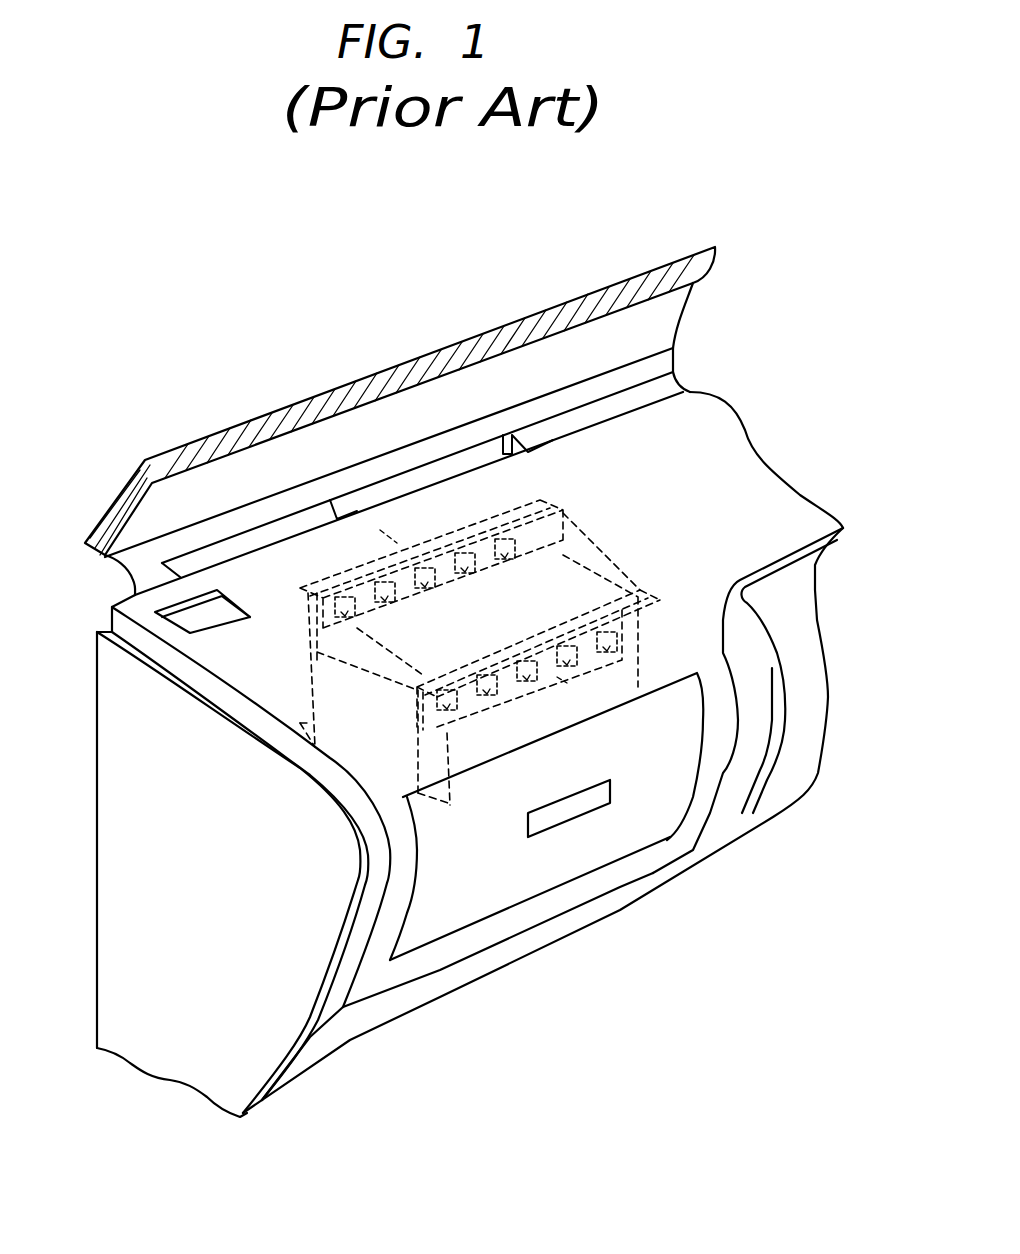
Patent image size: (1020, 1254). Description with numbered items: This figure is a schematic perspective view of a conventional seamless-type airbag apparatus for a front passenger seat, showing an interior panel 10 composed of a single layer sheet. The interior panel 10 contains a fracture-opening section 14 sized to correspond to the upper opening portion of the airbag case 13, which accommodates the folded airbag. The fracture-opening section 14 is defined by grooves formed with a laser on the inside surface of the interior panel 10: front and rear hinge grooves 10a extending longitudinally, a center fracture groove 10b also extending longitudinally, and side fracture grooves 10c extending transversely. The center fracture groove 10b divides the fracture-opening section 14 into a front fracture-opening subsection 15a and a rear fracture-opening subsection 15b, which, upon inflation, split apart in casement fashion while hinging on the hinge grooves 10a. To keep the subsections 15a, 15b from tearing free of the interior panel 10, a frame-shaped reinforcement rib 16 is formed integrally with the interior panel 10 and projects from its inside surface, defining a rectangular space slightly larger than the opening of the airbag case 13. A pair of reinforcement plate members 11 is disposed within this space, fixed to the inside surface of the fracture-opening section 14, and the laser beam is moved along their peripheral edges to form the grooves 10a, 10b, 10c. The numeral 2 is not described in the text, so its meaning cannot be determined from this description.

The interior panel 10 is at (703, 437).
The front and rear hinge grooves 10a is at (428, 548).
The center fracture groove 10b is at (548, 565).
The side fracture grooves 10c is at (310, 647).
The reinforcement plate members 11 is at (642, 560).
The airbag case 13 is at (302, 722).
The fracture-opening section 14 is at (513, 540).
The front fracture-opening subsection 15a is at (336, 598).
The rear fracture-opening subsection 15b is at (567, 595).
The reinforcement rib 16 is at (450, 805).
The terminal 2 is at (368, 520).